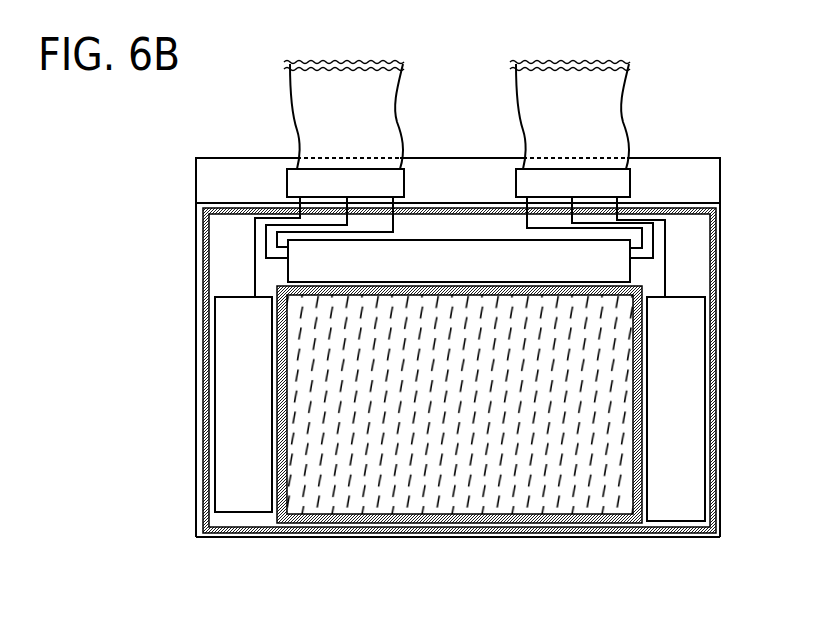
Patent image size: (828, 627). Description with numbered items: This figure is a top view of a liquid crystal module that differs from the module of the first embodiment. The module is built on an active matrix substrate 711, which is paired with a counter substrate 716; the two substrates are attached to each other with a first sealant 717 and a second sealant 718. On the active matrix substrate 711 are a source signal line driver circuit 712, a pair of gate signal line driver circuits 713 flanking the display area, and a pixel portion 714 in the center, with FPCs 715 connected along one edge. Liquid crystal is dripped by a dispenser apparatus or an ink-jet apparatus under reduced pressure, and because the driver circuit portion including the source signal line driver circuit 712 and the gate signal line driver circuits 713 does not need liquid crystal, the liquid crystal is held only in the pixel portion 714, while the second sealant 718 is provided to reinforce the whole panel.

The active matrix substrate 711 is at (247, 183).
The source signal line driver circuit 712 is at (459, 261).
The gate signal line driver circuit 713 is at (460, 409).
The pixel portion 714 is at (459, 404).
The FPC 715 is at (458, 185).
The counter substrate 716 is at (256, 527).
The first sealant 717 is at (520, 533).
The second sealant 718 is at (716, 333).